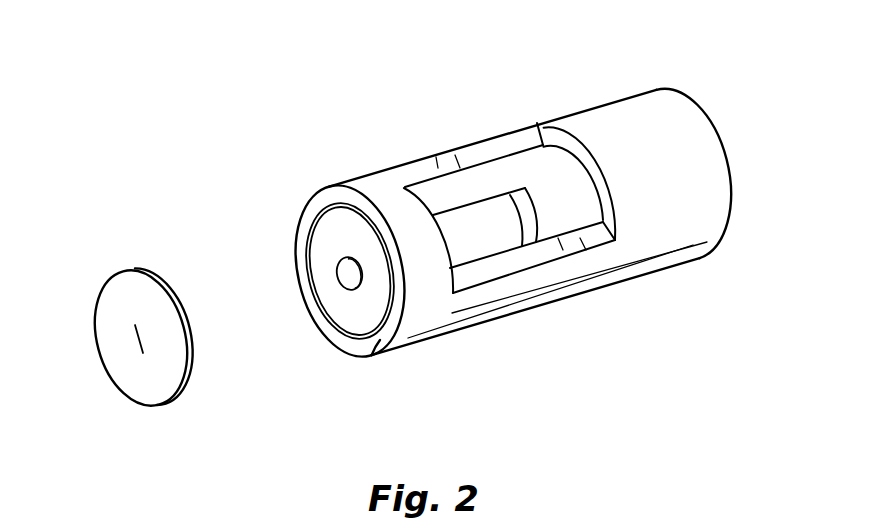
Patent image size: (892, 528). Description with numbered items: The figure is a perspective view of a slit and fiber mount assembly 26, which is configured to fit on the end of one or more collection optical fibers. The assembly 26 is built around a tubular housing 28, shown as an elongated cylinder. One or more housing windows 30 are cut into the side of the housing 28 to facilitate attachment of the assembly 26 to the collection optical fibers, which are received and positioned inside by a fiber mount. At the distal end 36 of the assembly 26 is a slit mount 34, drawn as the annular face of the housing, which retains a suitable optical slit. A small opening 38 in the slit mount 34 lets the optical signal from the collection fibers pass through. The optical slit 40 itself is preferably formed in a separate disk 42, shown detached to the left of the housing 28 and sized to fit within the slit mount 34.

The slit and fiber mount assembly 26 is at (418, 86).
The tubular housing 28 is at (596, 123).
The housing window 30 is at (538, 258).
The slit mount 34 is at (333, 225).
The distal end 36 is at (383, 358).
The small opening 38 is at (337, 282).
The optical slit 40 is at (142, 345).
The disk 42 is at (157, 382).